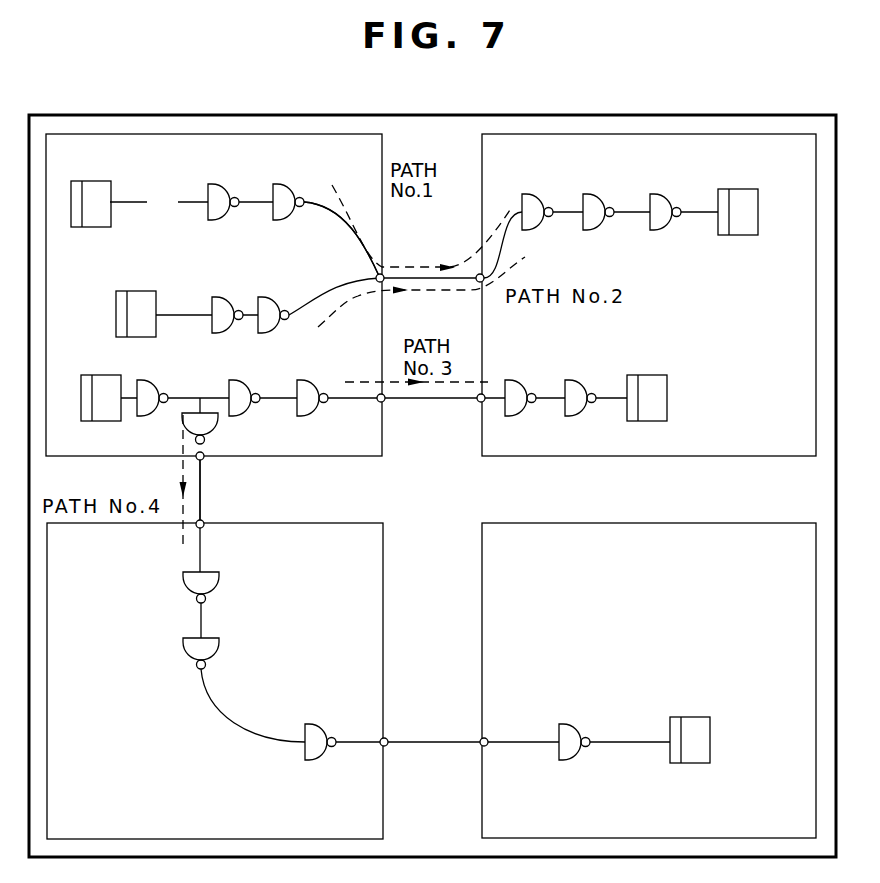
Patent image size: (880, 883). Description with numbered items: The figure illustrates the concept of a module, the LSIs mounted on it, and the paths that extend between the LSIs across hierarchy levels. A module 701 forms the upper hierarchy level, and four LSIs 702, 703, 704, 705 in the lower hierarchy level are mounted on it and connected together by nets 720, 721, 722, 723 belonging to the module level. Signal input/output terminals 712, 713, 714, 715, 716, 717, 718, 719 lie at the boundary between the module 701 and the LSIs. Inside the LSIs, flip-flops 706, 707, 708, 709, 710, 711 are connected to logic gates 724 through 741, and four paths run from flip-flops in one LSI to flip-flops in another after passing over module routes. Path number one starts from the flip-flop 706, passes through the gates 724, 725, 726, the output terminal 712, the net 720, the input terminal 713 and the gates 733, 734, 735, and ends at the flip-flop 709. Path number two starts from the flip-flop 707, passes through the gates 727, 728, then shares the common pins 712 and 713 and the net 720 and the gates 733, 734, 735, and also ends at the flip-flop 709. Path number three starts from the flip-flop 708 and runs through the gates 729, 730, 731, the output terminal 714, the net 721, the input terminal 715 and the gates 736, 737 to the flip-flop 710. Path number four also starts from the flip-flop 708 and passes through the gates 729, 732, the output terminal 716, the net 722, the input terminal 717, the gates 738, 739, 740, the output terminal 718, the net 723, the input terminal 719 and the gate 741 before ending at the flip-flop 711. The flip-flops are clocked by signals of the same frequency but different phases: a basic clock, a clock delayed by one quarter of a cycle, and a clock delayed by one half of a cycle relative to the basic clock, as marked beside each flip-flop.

The module 701 is at (463, 115).
The LSI 702 is at (265, 134).
The LSI 703 is at (775, 457).
The LSI 704 is at (383, 563).
The LSI 705 is at (677, 522).
The flip-flop 706 is at (117, 182).
The flip-flop 707 is at (116, 306).
The flip-flop 708 is at (81, 405).
The flip-flop 709 is at (745, 235).
The flip-flop 710 is at (667, 393).
The flip-flop 711 is at (710, 728).
The output terminal 712 is at (385, 272).
The input terminal 713 is at (479, 282).
The output terminal 714 is at (380, 401).
The input terminal 715 is at (479, 402).
The output terminal 716 is at (204, 455).
The input terminal 717 is at (205, 529).
The output terminal 718 is at (386, 737).
The input terminal 719 is at (482, 746).
The net 720 is at (462, 273).
The net 721 is at (413, 402).
The net 722 is at (203, 500).
The net 723 is at (432, 740).
The logic gate 724 is at (178, 190).
The logic gate 725 is at (250, 187).
The logic gate 726 is at (285, 218).
The logic gate 727 is at (212, 296).
The logic gate 728 is at (292, 265).
The logic gate 729 is at (145, 381).
The logic gate 730 is at (232, 381).
The logic gate 731 is at (300, 381).
The logic gate 732 is at (185, 416).
The logic gate 733 is at (527, 192).
The logic gate 734 is at (595, 193).
The logic gate 735 is at (650, 229).
The logic gate 736 is at (512, 416).
The logic gate 737 is at (583, 414).
The logic gate 738 is at (183, 583).
The logic gate 739 is at (187, 660).
The logic gate 740 is at (312, 722).
The logic gate 741 is at (577, 720).